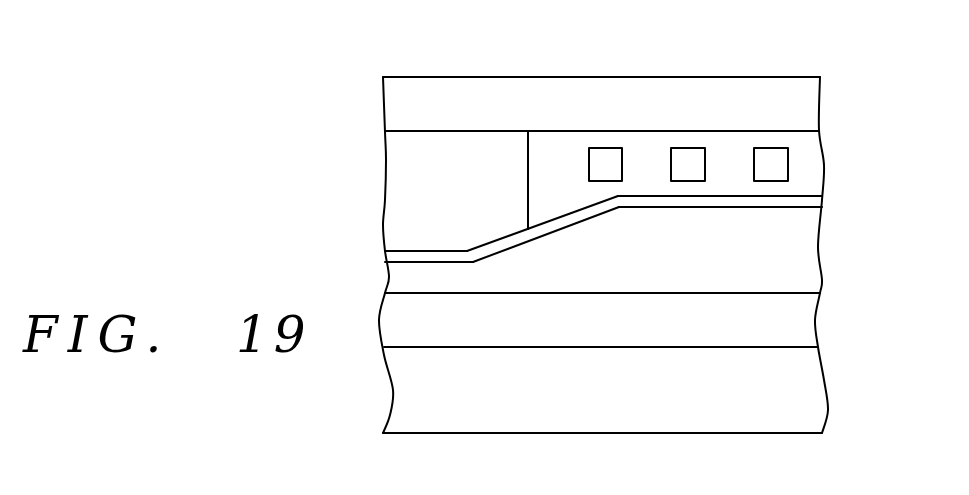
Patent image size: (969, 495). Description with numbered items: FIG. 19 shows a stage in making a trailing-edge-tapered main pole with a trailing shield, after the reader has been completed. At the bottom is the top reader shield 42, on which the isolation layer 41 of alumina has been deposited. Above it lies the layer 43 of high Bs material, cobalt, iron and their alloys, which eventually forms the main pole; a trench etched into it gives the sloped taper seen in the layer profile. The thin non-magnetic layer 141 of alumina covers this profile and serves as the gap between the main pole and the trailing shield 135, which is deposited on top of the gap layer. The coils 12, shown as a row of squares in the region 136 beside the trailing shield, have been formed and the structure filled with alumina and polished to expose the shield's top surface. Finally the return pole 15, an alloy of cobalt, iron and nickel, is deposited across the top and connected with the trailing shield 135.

The coils 12 is at (600, 158).
The return pole 15 is at (800, 103).
The trailing shield 135 is at (407, 160).
The second region 136 is at (810, 163).
The non-magnetic layer 141 is at (810, 202).
The layer of high Bs materials 43 is at (800, 243).
The isolation layer 41 is at (805, 315).
The top reader shield 42 is at (805, 379).